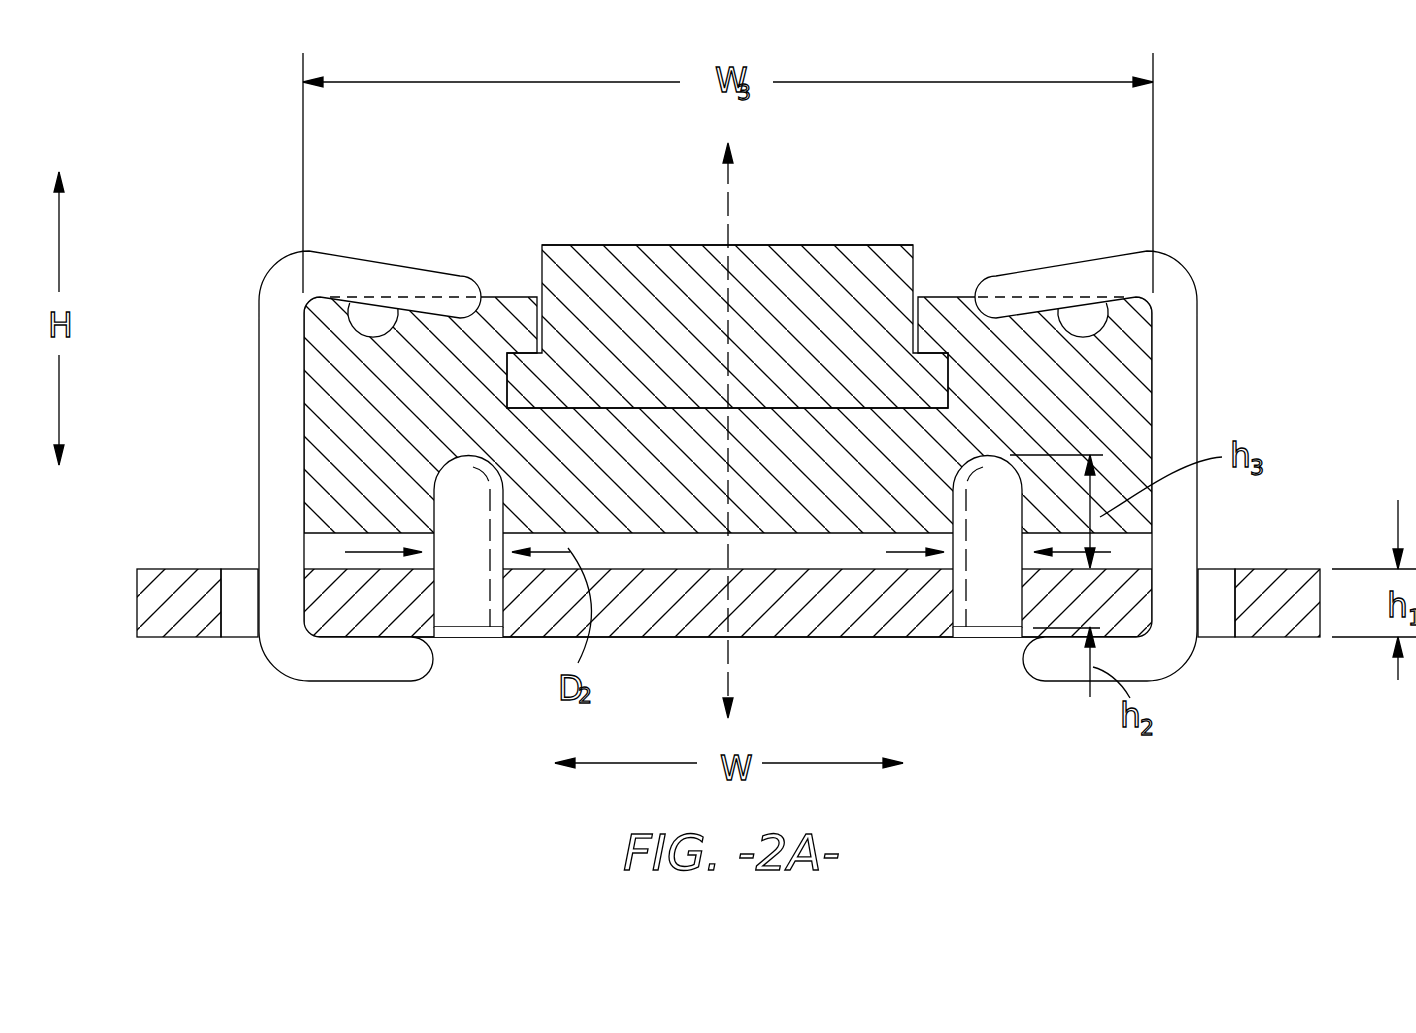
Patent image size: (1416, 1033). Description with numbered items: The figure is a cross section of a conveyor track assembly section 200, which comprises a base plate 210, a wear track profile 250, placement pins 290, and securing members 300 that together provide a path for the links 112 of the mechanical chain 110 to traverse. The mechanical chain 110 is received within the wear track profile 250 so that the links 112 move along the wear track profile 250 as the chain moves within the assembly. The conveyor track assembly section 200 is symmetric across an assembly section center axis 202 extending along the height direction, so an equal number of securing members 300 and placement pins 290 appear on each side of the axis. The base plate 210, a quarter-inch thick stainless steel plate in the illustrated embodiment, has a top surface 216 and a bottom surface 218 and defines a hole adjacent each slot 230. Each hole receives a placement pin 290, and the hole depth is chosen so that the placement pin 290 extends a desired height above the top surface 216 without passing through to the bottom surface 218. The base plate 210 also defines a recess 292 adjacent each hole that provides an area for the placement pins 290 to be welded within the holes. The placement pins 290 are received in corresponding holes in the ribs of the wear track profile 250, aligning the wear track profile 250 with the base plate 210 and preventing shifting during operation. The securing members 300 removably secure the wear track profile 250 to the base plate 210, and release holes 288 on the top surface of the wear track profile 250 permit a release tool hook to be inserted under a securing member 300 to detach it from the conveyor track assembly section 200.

The conveyor track assembly section 200 is at (700, 397).
The mechanical chain 110 is at (597, 232).
The links 112 is at (807, 288).
The assembly section center axis 202 is at (727, 224).
The base plate 210 is at (695, 598).
The top surface 216 is at (165, 568).
The bottom surface 218 is at (770, 640).
The slot 230 is at (240, 583).
The wear track profile 250 is at (1125, 412).
The release holes 288 is at (368, 323).
The placement pins 290 is at (478, 595).
The recess 292 is at (467, 640).
The securing members 300 is at (288, 287).